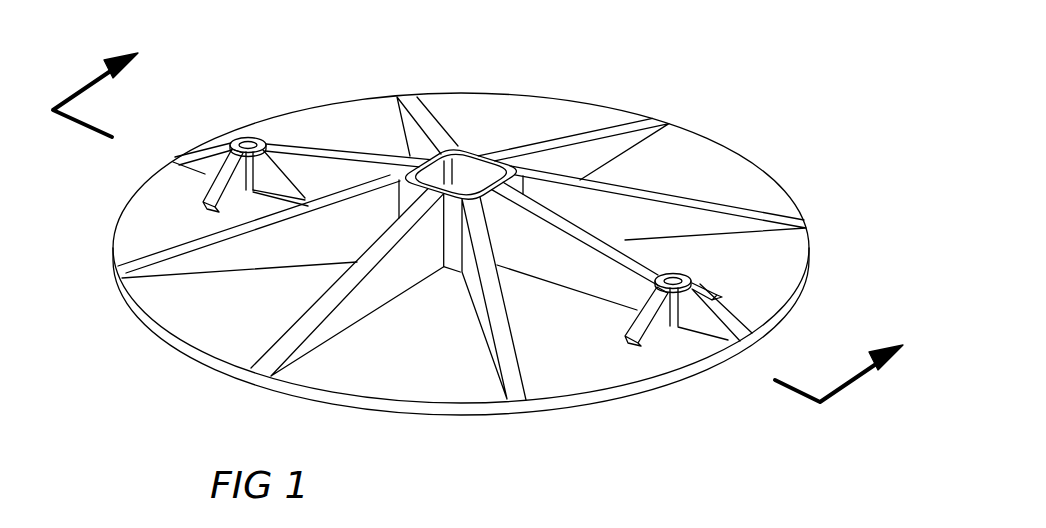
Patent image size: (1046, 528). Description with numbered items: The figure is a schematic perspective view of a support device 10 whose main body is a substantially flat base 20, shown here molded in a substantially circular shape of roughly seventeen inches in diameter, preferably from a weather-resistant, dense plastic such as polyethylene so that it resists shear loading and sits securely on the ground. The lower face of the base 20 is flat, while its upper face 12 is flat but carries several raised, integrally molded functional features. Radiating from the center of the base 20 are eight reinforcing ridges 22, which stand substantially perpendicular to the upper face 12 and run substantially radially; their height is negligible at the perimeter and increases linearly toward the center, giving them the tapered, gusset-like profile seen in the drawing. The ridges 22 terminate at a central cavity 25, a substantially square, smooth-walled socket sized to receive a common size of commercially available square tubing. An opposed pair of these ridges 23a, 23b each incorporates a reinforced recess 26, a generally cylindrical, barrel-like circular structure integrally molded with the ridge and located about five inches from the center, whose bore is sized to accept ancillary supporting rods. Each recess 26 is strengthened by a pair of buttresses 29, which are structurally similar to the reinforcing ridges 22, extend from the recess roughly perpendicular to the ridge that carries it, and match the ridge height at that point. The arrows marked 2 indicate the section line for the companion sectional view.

The support device 10 is at (758, 153).
The upper face 12 is at (426, 372).
The base 20 is at (570, 373).
The reinforcing ridges 22 is at (428, 112).
The ridge 23a is at (212, 144).
The ridge 23b is at (620, 242).
The central cavity 25 is at (488, 178).
The reinforced recess 26 is at (249, 140).
The buttresses 29 is at (212, 188).
The section line for FIG. 2 is at (484, 223).